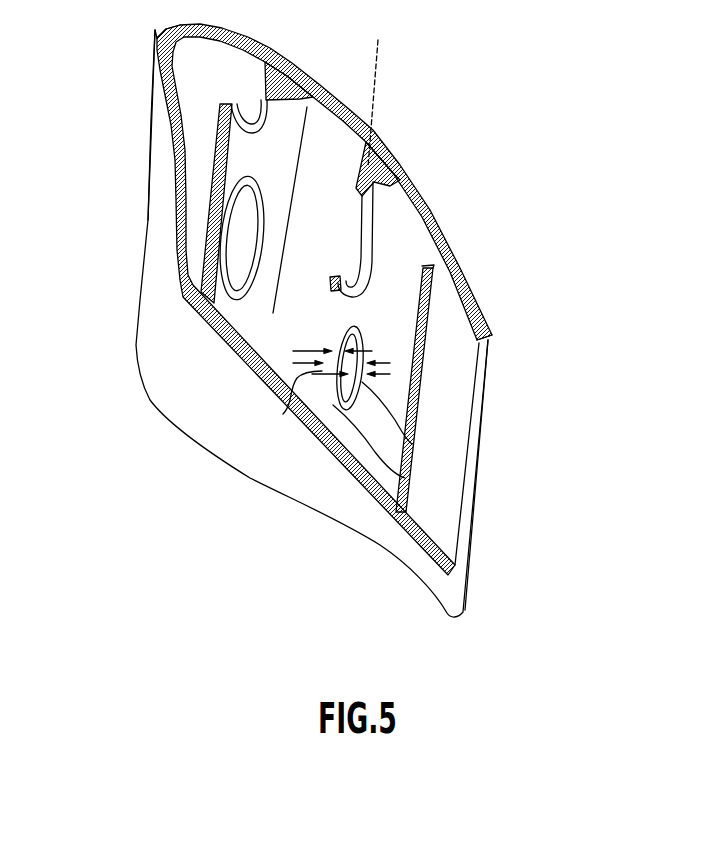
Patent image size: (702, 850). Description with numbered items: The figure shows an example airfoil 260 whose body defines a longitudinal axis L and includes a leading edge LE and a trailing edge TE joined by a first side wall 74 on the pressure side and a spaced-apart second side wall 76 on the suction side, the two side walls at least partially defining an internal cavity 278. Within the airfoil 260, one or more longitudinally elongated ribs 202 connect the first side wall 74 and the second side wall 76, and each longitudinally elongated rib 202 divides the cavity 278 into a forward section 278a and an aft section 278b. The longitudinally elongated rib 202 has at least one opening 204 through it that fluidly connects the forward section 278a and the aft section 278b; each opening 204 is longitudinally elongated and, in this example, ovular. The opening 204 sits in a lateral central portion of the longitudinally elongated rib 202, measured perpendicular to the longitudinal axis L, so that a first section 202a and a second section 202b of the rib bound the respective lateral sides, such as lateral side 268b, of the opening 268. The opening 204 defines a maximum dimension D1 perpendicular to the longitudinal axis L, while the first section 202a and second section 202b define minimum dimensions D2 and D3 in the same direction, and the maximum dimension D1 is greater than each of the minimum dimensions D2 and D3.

The airfoil 260 is at (128, 430).
The first side wall 74 is at (167, 145).
The second side wall 76 is at (302, 68).
The forward section 278a is at (333, 150).
The longitudinal axis L is at (378, 97).
The leading edge LE is at (119, 47).
The trailing edge TE is at (498, 380).
The cavity 278 is at (420, 243).
The aft section 278b is at (398, 352).
The opening 268 is at (317, 440).
The lateral side 268b is at (362, 333).
The longitudinally elongated rib 202 is at (355, 308).
The first section 202a is at (285, 411).
The second section 202b is at (412, 444).
The opening 204 is at (405, 478).
The maximum dimension D1 is at (316, 385).
The minimum dimension D2 is at (397, 372).
The minimum dimension D3 is at (308, 355).